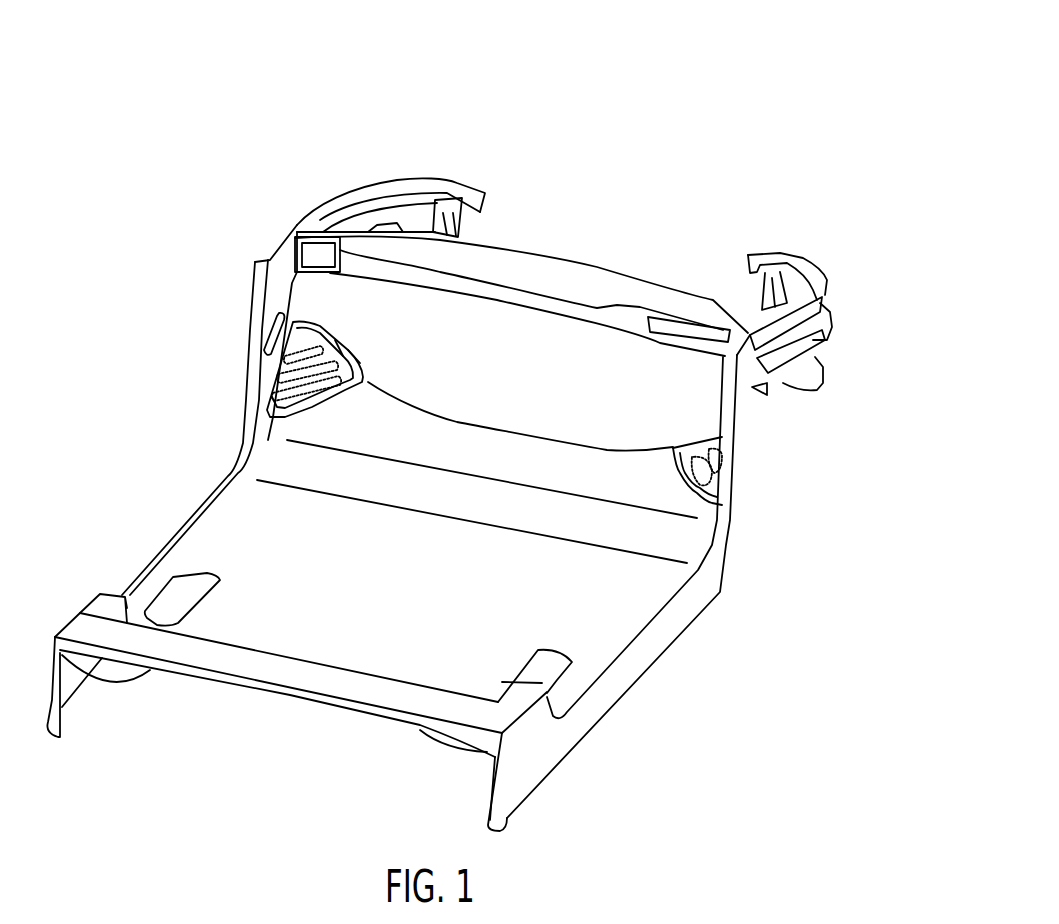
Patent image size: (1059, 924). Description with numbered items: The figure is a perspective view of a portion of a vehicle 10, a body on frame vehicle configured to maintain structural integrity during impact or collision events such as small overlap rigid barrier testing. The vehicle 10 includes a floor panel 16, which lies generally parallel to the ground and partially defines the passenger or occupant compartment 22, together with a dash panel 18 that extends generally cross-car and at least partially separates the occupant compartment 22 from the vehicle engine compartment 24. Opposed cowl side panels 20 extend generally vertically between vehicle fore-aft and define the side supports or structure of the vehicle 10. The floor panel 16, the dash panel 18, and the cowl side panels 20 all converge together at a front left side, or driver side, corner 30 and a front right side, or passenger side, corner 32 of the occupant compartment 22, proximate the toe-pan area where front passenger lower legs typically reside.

The vehicle 10 is at (463, 425).
The floor panel 16 is at (207, 523).
The dash panel 18 is at (327, 303).
The cowl side panel 20 is at (263, 413).
The occupant compartment 22 is at (220, 443).
The engine compartment 24 is at (567, 183).
The front left side corner 30 is at (325, 413).
The front right side corner 32 is at (768, 468).